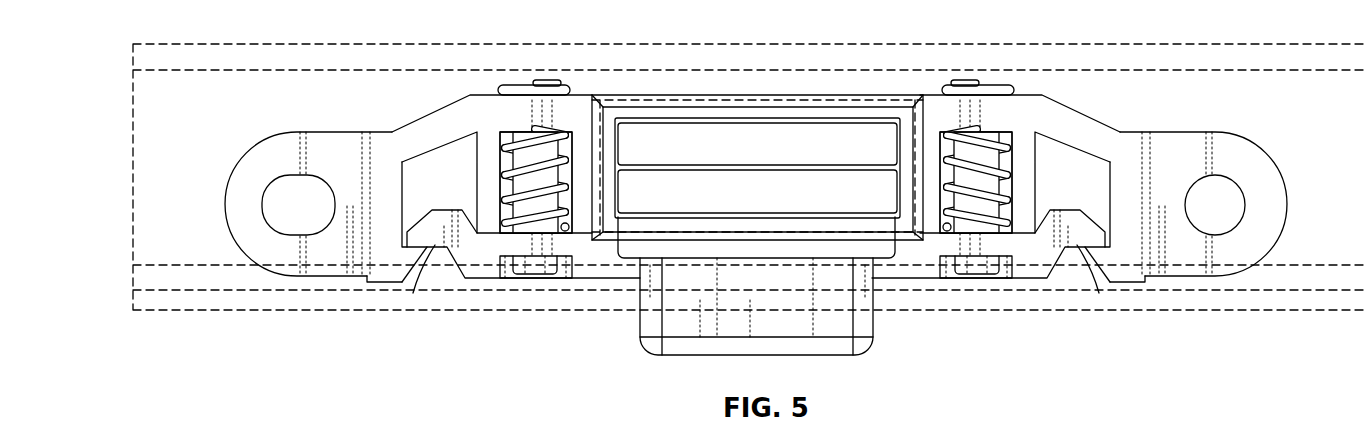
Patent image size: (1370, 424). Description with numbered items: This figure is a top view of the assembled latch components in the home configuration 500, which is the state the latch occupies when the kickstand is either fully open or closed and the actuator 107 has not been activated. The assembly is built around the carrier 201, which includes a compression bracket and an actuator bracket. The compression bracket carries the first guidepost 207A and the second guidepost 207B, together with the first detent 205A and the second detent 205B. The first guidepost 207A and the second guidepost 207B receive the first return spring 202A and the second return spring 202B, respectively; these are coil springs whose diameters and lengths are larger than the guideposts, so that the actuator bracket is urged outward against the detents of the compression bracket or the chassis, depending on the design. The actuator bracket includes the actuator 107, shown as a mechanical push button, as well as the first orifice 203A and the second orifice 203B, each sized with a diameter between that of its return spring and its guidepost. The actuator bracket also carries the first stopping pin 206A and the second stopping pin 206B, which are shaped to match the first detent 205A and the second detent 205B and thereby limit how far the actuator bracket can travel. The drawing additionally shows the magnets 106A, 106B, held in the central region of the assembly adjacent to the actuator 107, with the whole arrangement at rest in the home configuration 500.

The home configuration 500 is at (226, 36).
The carrier 201 is at (1280, 208).
The first return spring 202A is at (548, 82).
The second return spring 202B is at (1008, 187).
The first orifice 203A is at (512, 277).
The second orifice 203B is at (955, 273).
The first detent 205A is at (377, 283).
The second detent 205B is at (1127, 283).
The first stopping pin 206A is at (427, 258).
The second stopping pin 206B is at (1085, 250).
The first guidepost 207A is at (547, 275).
The second guidepost 207B is at (972, 270).
The magnet 106A is at (810, 182).
The magnet 106B is at (692, 250).
The actuator 107 is at (785, 356).